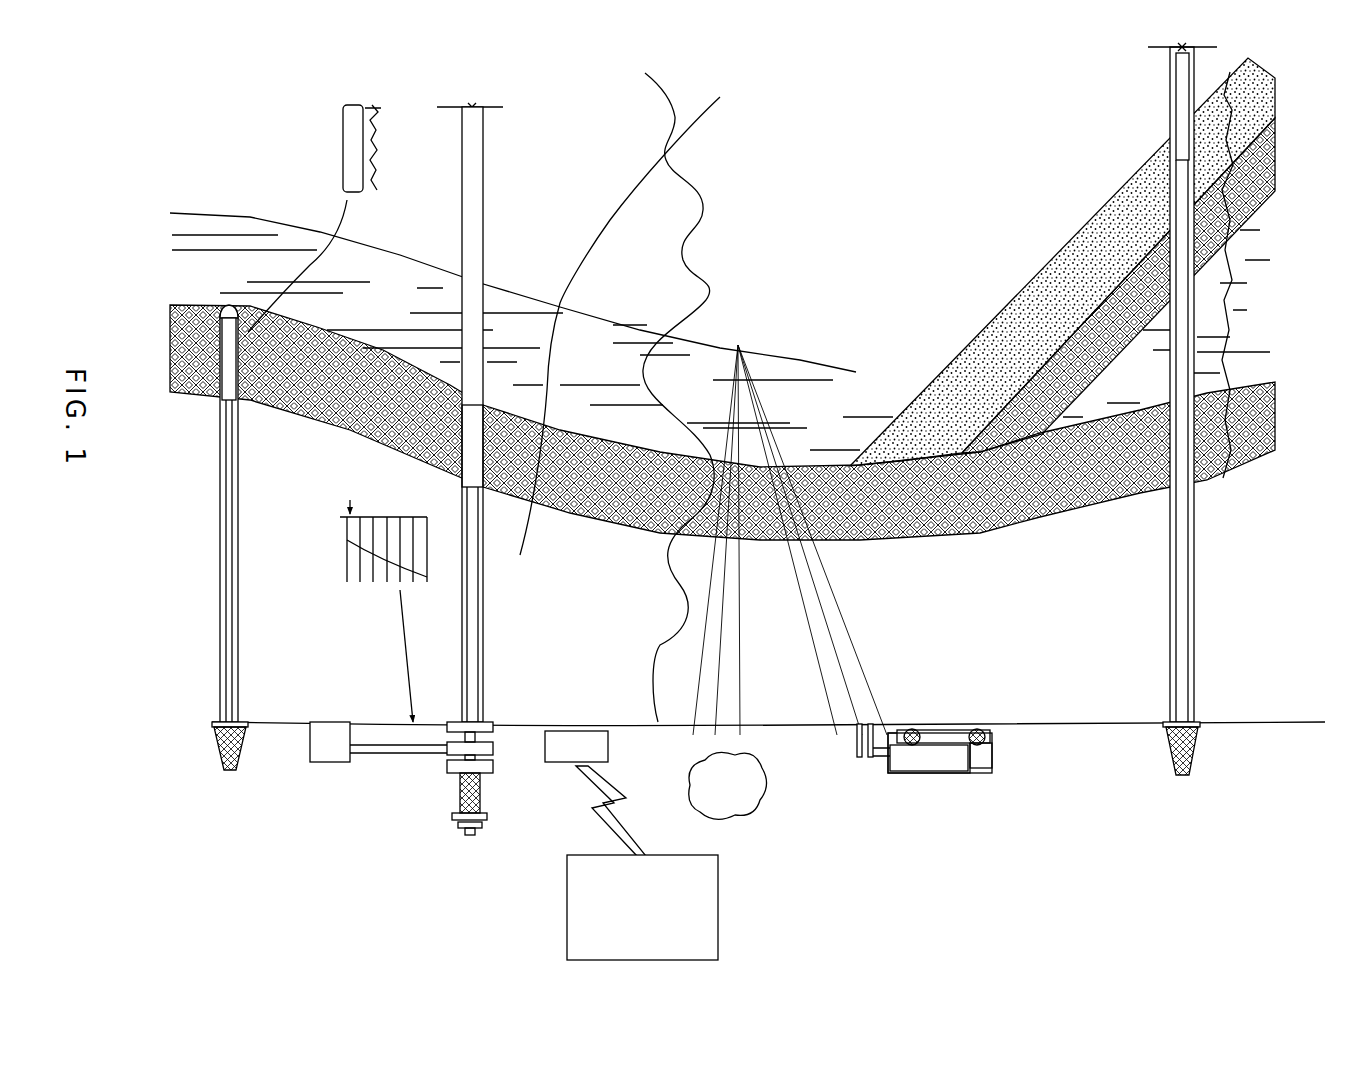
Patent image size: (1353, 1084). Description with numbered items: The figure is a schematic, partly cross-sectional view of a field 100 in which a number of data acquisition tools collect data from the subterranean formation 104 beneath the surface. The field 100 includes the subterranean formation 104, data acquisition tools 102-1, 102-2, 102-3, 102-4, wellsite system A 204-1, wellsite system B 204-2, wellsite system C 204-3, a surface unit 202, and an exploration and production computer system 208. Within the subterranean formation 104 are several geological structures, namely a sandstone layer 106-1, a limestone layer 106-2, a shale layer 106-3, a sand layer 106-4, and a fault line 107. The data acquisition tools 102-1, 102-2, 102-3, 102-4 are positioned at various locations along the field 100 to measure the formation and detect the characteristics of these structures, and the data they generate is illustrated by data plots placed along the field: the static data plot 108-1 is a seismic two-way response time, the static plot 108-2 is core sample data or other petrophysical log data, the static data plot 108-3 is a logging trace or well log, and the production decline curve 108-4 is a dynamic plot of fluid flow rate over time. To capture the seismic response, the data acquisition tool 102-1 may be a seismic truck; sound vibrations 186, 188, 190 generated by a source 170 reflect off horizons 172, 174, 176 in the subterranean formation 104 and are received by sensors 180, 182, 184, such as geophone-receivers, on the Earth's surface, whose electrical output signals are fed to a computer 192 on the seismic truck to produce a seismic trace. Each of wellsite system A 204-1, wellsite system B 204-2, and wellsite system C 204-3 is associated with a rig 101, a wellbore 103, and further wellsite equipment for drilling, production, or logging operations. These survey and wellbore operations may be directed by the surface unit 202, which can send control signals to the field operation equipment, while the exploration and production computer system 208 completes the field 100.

The field 100 is at (1197, 890).
The rig 101 is at (222, 742).
The data acquisition tool 102-1 is at (958, 775).
The data acquisition tool 102-2 is at (178, 306).
The data acquisition tool 102-3 is at (1172, 102).
The data acquisition tool 102-4 is at (422, 412).
The wellbore 103 is at (218, 668).
The subterranean formation 104 is at (857, 292).
The sandstone layer 106-1 is at (272, 377).
The limestone layer 106-2 is at (354, 316).
The shale layer 106-3 is at (1057, 370).
The sand layer 106-4 is at (1017, 322).
The fault line 107 is at (523, 550).
The static data plot 108-1 is at (683, 237).
The static plot 108-2 is at (377, 178).
The static data plot 108-3 is at (1265, 275).
The production decline curve 108-4 is at (380, 513).
The source 170 is at (710, 793).
The horizon 172 is at (852, 547).
The horizon 174 is at (932, 467).
The horizon 176 is at (802, 356).
The sensor 180 is at (848, 737).
The sensor 182 is at (868, 742).
The sensor 184 is at (888, 740).
The sound vibration 186 is at (703, 627).
The sound vibration 188 is at (727, 630).
The sound vibration 190 is at (748, 637).
The computer 192 is at (930, 770).
The surface unit 202 is at (561, 756).
The wellsite system A 204-1 is at (1160, 750).
The wellsite system B 204-2 is at (460, 855).
The wellsite system C 204-3 is at (252, 773).
The exploration and production (E&P) computer system 208 is at (627, 888).